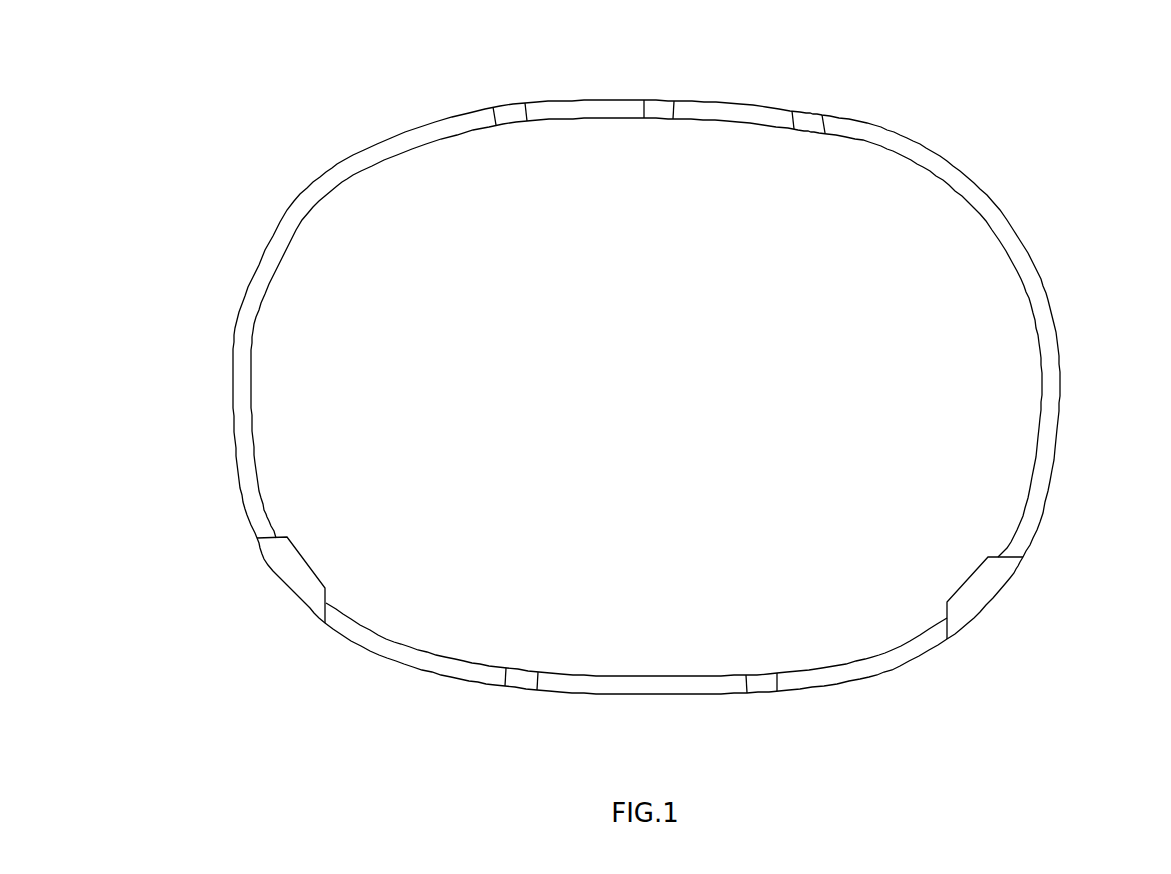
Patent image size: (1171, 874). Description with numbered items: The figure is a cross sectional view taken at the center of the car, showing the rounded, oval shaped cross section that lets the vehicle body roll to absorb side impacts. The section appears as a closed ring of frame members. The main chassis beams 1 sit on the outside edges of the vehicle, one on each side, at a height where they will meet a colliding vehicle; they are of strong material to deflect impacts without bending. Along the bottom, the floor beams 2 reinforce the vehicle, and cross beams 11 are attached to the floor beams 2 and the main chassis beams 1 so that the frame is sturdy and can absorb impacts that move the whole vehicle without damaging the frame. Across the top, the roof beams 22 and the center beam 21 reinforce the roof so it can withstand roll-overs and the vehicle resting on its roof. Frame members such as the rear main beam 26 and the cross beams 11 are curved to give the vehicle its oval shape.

The main chassis beam 1 is at (285, 565).
The floor beam 2 is at (518, 672).
The cross beam 11 is at (415, 658).
The center beam 21 is at (663, 110).
The roof beam 22 is at (813, 120).
The rear main beam 26 is at (513, 112).